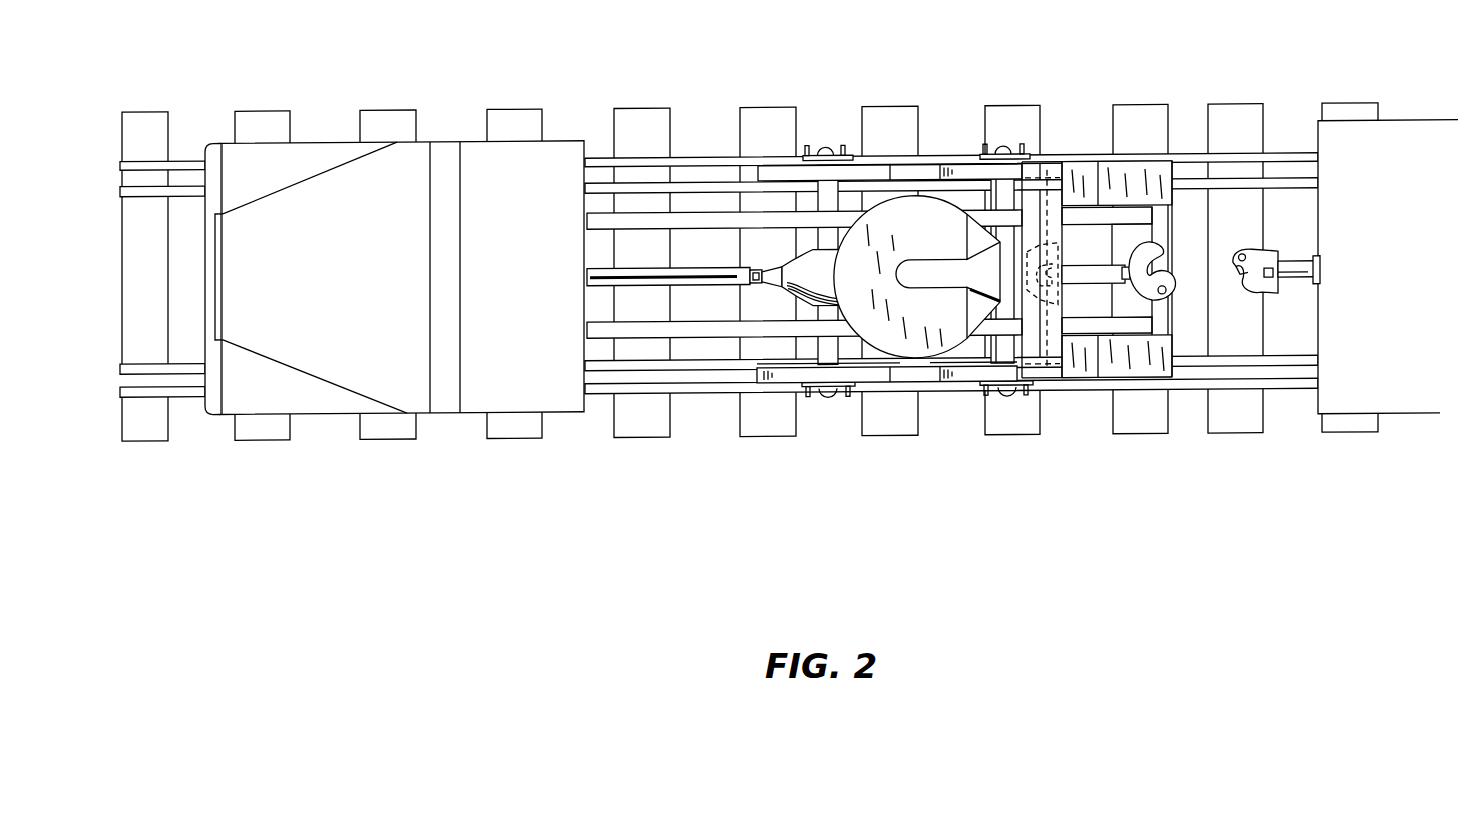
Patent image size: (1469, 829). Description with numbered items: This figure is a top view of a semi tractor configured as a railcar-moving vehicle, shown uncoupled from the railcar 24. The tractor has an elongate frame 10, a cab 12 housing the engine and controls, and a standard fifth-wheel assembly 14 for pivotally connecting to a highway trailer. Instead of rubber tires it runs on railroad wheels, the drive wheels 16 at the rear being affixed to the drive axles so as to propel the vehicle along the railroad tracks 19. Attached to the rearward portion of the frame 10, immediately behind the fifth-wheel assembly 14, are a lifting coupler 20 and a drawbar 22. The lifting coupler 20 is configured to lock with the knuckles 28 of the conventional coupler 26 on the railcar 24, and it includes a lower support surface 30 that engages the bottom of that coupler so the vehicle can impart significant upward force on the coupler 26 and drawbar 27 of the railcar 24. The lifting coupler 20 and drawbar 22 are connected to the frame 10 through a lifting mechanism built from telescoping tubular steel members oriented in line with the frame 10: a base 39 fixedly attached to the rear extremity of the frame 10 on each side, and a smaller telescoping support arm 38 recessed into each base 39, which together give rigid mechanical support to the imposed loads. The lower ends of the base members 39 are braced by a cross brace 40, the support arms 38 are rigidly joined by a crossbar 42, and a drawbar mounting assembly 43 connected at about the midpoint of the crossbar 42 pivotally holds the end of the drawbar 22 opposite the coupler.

The frame 10 is at (703, 223).
The cab 12 is at (400, 330).
The fifth-wheel assembly 14 is at (883, 232).
The drive wheels 16 is at (782, 172).
The railroad tracks 19 is at (630, 175).
The lifting coupler 20 is at (1152, 320).
The drawbar 22 is at (1100, 277).
The railcar 24 is at (1414, 229).
The coupler 26 is at (1265, 292).
The drawbar 27 is at (1294, 255).
The knuckles 28 is at (1238, 245).
The lower support surface 30 is at (1163, 263).
The telescoping support arm 38 is at (1087, 172).
The base 39 is at (1110, 170).
The cross brace 40 is at (1160, 223).
The crossbar 42 is at (1051, 358).
The drawbar mounting assembly 43 is at (1033, 302).